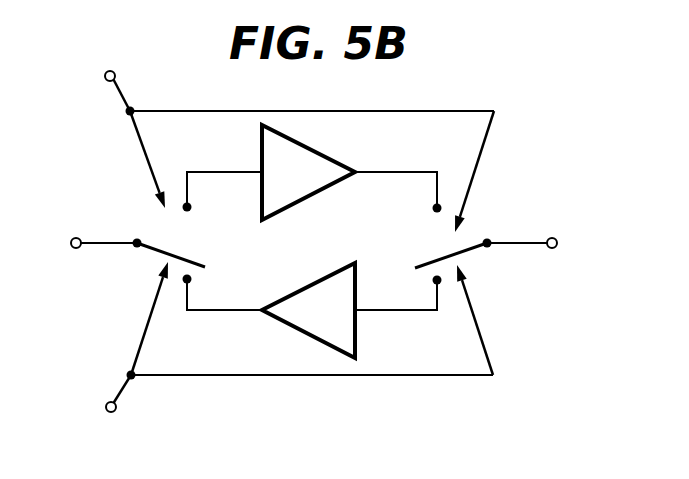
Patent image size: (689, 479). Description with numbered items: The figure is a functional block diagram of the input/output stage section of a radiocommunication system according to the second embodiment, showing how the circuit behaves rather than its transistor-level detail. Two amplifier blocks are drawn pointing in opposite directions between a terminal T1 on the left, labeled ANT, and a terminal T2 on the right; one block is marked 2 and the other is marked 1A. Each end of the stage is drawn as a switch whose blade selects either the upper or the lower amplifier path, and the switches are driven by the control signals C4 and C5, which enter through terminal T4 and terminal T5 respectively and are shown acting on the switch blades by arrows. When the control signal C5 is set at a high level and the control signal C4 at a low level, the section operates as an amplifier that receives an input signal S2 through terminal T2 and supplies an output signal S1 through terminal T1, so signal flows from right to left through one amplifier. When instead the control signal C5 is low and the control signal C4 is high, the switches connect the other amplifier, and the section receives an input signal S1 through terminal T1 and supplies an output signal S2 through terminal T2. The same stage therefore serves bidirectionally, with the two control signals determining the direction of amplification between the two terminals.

The amplifier (transmit path) 2 is at (323, 152).
The amplifier (receive path) 1A is at (310, 285).
The terminal T4 is at (99, 88).
The control signal C4 is at (147, 147).
The antenna ANT is at (76, 217).
The signal S1 is at (119, 251).
The terminal T1 is at (76, 249).
The signal S2 is at (489, 238).
The terminal T2 is at (556, 248).
The control signal C5 is at (125, 326).
The terminal T5 is at (110, 412).